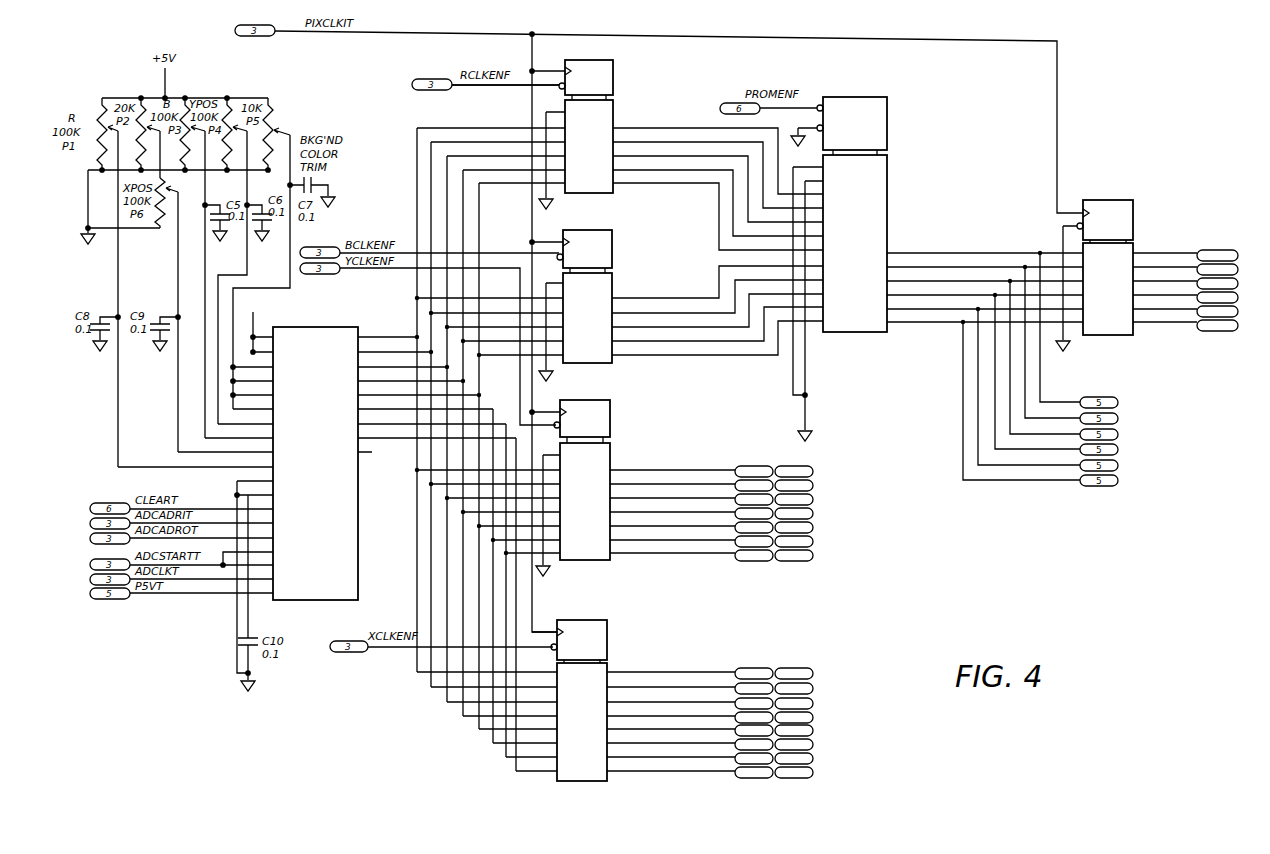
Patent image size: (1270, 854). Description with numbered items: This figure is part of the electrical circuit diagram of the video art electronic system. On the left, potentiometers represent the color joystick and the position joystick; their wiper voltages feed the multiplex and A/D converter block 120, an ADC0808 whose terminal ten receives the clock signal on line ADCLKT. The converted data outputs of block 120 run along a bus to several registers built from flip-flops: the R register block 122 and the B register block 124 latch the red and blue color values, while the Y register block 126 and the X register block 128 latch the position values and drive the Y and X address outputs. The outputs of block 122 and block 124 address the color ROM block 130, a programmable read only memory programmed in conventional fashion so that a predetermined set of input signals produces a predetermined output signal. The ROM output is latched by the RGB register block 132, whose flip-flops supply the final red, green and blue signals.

The multiplex and A/D converter block 120 is at (358, 545).
The R register block 122 is at (613, 75).
The B register block 124 is at (612, 250).
The Y register block 126 is at (610, 413).
The X register block 128 is at (607, 632).
The color ROM block 130 is at (887, 130).
The RGB register block 132 is at (1133, 212).